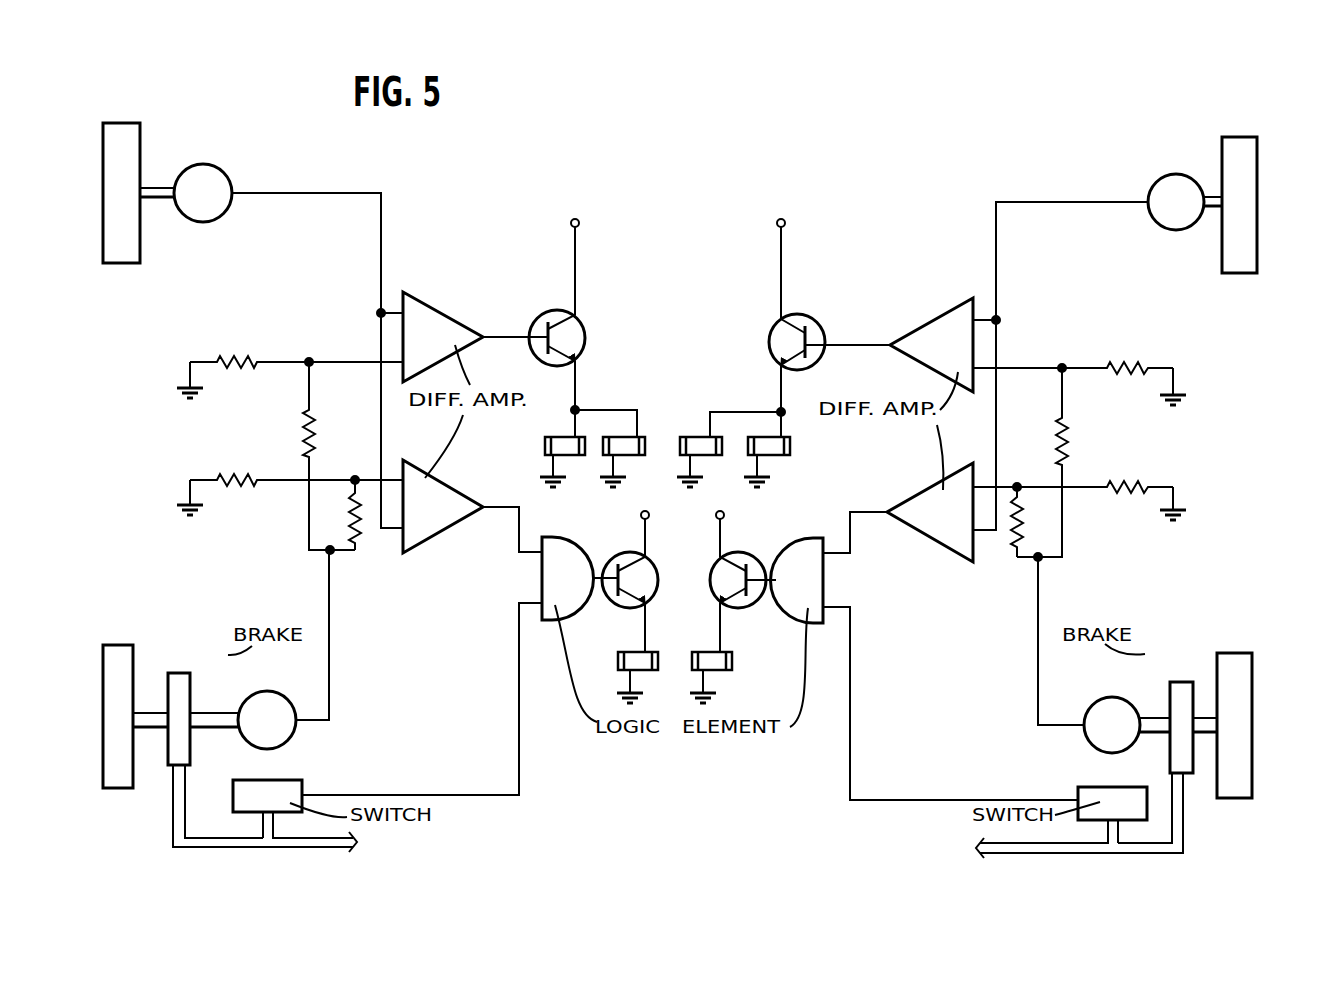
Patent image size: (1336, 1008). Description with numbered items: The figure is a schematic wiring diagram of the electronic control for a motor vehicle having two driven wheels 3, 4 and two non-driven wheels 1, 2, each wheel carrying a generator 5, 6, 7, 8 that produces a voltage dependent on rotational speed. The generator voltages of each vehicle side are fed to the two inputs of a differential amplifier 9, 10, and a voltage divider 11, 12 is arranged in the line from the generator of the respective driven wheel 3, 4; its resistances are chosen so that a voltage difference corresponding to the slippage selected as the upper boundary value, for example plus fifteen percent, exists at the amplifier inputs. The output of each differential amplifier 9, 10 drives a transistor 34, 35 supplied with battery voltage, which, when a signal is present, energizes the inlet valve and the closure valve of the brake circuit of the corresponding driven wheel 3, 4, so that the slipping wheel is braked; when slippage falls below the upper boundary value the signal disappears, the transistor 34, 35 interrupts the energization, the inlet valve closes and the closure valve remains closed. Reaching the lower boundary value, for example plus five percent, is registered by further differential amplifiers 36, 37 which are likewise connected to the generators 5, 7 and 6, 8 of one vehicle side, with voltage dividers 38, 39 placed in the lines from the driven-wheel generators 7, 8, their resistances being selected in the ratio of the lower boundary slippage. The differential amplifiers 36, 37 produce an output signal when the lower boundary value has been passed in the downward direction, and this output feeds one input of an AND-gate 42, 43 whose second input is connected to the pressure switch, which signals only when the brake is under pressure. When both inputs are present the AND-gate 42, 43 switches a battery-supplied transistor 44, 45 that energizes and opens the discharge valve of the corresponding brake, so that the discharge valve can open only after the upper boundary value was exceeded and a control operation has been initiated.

The non-driven wheel 1 is at (143, 152).
The non-driven wheel 2 is at (1219, 165).
The driven wheel 3 is at (133, 652).
The driven wheel 4 is at (1218, 654).
The generator 5 is at (226, 181).
The generator 6 is at (1153, 186).
The generator 7 is at (281, 692).
The generator 8 is at (1097, 697).
The differential amplifier 9 is at (441, 312).
The differential amplifier 10 is at (925, 314).
The voltage divider 11 is at (292, 388).
The voltage divider 12 is at (1083, 393).
The transistor 34 is at (580, 334).
The transistor 35 is at (772, 332).
The differential amplifier 36 is at (441, 478).
The differential amplifier 37 is at (914, 492).
The voltage divider 38 is at (351, 472).
The voltage divider 39 is at (1018, 478).
The AND-gate 42 is at (542, 580).
The AND-gate 43 is at (823, 581).
The transistor 44 is at (651, 560).
The transistor 45 is at (712, 586).